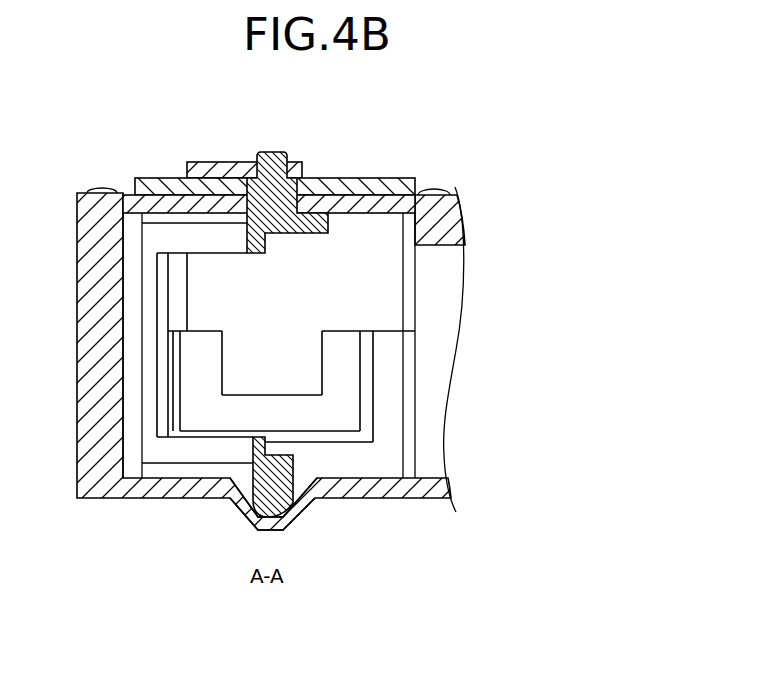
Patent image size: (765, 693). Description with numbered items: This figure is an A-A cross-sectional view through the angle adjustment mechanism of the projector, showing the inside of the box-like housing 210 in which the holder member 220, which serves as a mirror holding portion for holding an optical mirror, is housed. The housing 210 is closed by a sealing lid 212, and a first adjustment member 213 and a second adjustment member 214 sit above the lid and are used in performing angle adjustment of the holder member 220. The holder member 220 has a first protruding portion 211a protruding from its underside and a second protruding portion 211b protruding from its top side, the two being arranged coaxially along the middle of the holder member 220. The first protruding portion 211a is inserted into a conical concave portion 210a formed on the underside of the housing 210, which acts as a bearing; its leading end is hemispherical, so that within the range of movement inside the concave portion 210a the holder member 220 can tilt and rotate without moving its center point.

The housing 210 is at (98, 478).
The concave portion 210a is at (301, 481).
The first protruding portion 211a is at (287, 508).
The second protruding portion 211b is at (283, 148).
The sealing lid 212 is at (128, 198).
The first adjustment member 213 is at (165, 180).
The second adjustment member 214 is at (218, 162).
The holder member 220 is at (182, 452).